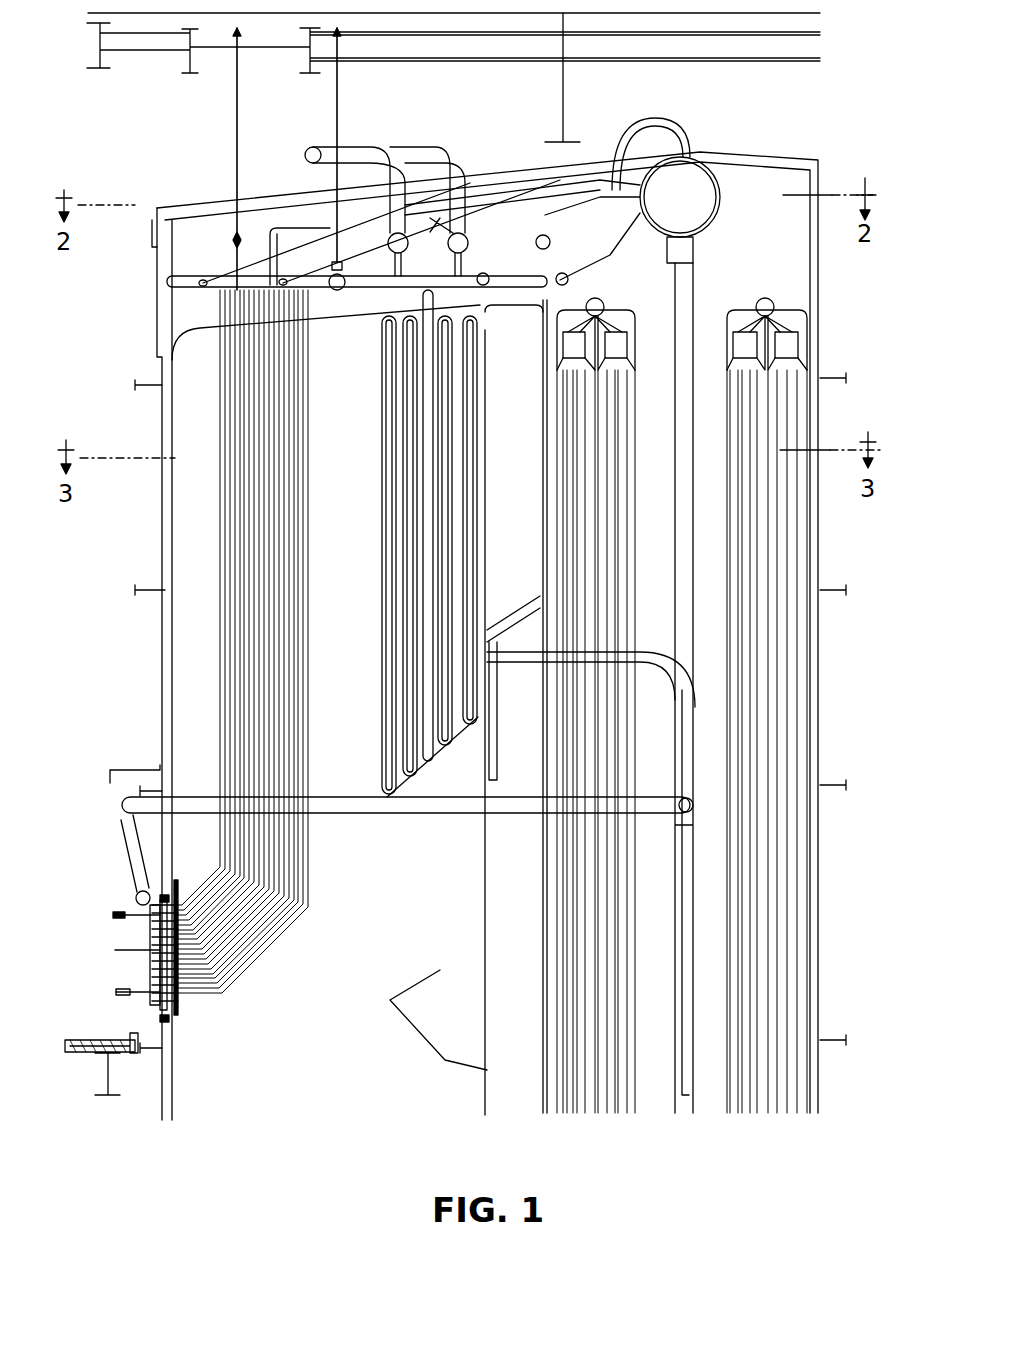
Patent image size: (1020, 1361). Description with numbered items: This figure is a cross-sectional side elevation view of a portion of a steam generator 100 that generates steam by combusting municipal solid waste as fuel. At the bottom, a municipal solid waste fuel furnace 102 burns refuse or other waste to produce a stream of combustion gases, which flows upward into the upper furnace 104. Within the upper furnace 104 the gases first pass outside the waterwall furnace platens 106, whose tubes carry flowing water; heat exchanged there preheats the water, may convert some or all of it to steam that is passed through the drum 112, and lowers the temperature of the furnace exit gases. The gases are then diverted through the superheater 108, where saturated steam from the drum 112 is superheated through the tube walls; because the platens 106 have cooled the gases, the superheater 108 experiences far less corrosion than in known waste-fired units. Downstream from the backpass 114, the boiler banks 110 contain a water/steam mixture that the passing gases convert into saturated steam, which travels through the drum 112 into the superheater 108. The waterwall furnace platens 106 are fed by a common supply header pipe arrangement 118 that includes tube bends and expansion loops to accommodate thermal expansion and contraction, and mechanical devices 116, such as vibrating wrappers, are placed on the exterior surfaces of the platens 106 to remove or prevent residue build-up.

The steam generator 100 is at (182, 160).
The municipal solid waste fuel furnace 102 is at (293, 1070).
The upper furnace 104 is at (343, 652).
The waterwall furnace platens 106 is at (260, 543).
The superheater 108 is at (382, 783).
The boiler banks 110 is at (590, 1075).
The drum 112 is at (690, 172).
The backpass 114 is at (505, 408).
The mechanical devices 116 is at (100, 988).
The common supply header pipe arrangement 118 is at (122, 822).